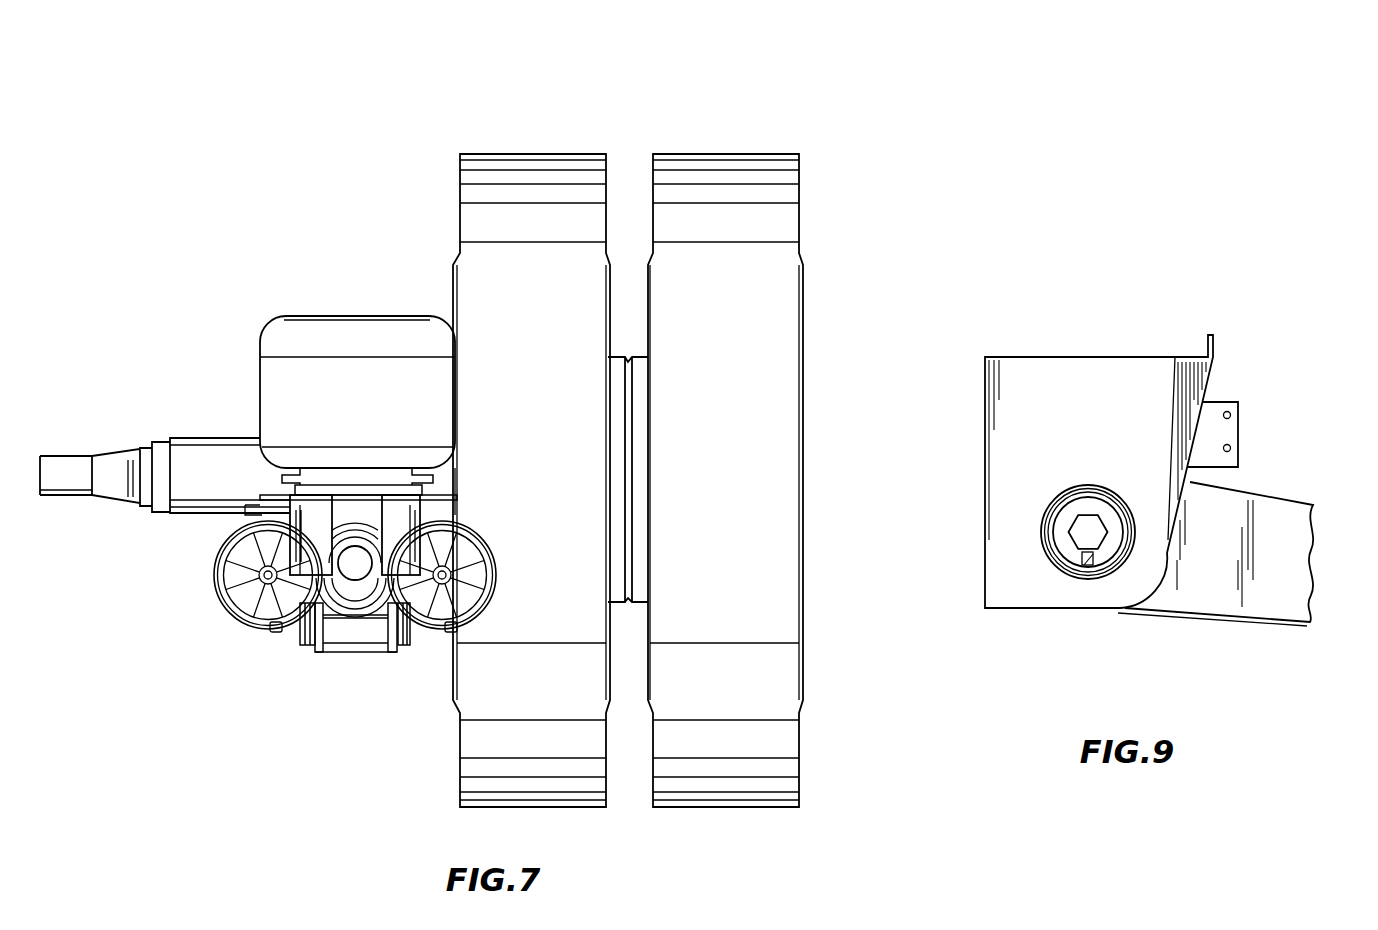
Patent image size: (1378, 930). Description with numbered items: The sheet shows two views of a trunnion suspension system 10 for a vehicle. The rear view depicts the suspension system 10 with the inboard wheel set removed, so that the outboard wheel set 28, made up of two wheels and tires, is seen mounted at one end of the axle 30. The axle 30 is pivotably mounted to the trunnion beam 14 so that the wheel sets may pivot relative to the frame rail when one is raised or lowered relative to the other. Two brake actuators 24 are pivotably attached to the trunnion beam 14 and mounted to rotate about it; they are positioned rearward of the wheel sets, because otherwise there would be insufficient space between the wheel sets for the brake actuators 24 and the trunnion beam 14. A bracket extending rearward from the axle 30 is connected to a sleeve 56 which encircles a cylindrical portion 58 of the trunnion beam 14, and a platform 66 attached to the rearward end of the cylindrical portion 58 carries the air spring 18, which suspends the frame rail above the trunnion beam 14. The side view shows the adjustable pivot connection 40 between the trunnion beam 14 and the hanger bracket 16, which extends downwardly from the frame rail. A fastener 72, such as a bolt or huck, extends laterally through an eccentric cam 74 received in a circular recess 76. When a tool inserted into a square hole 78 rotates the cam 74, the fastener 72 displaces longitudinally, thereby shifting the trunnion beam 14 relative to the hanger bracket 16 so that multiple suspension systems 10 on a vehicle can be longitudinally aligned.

In FIG. 7, the suspension system 10 is at (188, 184).
In FIG. 9, the suspension system 10 is at (1297, 380).
In FIG. 7, the trunnion beam 14 is at (322, 666).
In FIG. 9, the trunnion beam 14 is at (1266, 627).
In FIG. 9, the hanger bracket 16 is at (985, 366).
In FIG. 7, the air spring 18 is at (263, 342).
In FIG. 7, the brake actuator 24 is at (242, 621).
In FIG. 7, the wheel set 28 is at (755, 153).
In FIG. 7, the axle 30 is at (183, 440).
In FIG. 9, the pivot connection 40 is at (1029, 554).
In FIG. 7, the sleeve 56 is at (347, 598).
In FIG. 7, the cylindrical portion 58 is at (368, 600).
In FIG. 7, the platform 66 is at (320, 497).
In FIG. 9, the fastener 72 is at (1102, 520).
In FIG. 9, the eccentric cam 74 is at (1053, 565).
In FIG. 9, the circular recess 76 is at (1070, 511).
In FIG. 9, the square hole 78 is at (1083, 568).